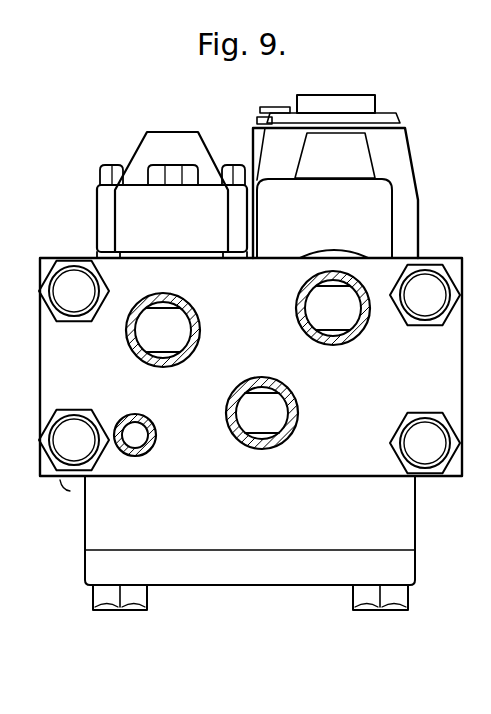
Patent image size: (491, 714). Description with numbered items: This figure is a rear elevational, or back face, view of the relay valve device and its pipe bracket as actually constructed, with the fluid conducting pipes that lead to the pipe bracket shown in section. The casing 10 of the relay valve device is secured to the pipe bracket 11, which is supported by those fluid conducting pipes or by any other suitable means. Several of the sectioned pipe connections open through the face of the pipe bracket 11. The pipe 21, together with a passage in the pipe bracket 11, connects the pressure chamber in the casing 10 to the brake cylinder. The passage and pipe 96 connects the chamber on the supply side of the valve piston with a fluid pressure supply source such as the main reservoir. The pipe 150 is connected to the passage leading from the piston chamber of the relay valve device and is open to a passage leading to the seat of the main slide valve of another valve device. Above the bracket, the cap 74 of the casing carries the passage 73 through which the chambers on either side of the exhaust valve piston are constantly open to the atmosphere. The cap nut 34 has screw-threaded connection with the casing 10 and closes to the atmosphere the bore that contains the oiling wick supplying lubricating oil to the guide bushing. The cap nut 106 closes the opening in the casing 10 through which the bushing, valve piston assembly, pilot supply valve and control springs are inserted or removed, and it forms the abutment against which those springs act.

The casing 10 is at (405, 162).
The pipe bracket 11 is at (48, 370).
The pipe 21 is at (227, 399).
The cap nut 34 is at (262, 126).
The passage 73 is at (197, 315).
The cap 74 is at (165, 143).
The passage and pipe 96 is at (305, 283).
The cap nut 106 is at (315, 105).
The pipe 150 is at (154, 448).